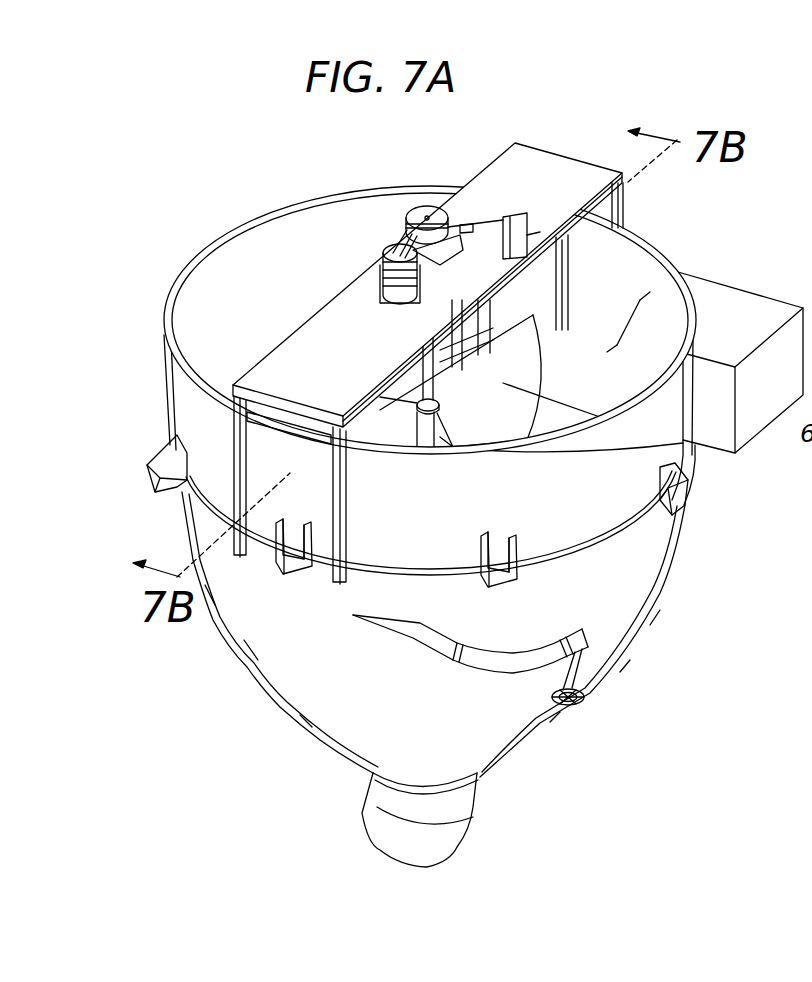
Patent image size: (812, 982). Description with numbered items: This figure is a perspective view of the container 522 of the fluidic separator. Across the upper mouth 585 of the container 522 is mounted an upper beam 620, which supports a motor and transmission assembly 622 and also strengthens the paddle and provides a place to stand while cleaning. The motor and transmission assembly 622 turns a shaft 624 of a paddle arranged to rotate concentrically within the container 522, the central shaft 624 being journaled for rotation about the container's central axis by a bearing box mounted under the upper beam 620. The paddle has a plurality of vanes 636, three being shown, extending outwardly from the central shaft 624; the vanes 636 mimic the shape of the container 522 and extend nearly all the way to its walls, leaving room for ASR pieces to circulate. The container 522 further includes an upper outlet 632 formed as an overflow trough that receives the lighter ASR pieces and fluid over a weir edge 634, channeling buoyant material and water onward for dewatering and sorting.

The container 522 is at (263, 684).
The upper mouth 585 is at (250, 222).
The upper beam 620 is at (562, 160).
The motor and transmission assembly 622 is at (398, 245).
The shaft 624 is at (416, 410).
The upper outlet 632 is at (738, 303).
The weir edge 634 is at (617, 345).
The vanes 636 is at (686, 447).